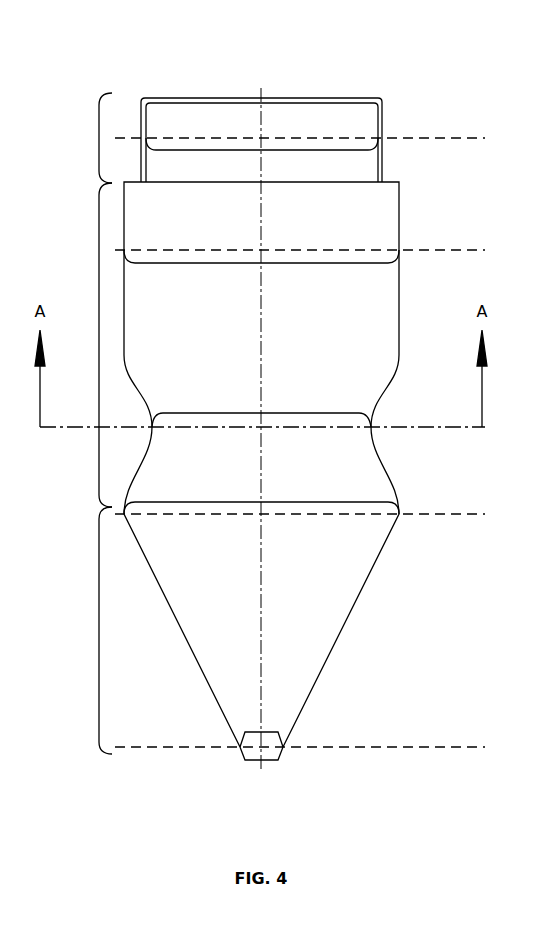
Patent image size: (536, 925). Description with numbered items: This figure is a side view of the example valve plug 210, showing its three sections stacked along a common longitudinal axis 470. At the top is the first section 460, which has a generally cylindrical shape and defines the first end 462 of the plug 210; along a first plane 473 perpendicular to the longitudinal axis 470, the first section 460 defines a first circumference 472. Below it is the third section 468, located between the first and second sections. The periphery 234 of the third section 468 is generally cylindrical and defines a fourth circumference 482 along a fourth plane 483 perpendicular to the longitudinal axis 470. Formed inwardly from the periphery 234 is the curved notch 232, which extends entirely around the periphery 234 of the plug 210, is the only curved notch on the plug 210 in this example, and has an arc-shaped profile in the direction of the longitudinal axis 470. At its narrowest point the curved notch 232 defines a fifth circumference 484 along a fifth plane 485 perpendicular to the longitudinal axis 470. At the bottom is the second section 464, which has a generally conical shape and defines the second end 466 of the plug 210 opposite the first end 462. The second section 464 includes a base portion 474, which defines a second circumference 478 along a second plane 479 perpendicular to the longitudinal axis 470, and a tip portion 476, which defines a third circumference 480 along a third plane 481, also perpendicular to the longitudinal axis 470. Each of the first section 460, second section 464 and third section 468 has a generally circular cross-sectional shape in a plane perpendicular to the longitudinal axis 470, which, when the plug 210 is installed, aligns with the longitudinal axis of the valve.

The plug 210 is at (389, 78).
The first section 460 is at (99, 138).
The first end 462 is at (298, 97).
The second section 464 is at (99, 630).
The second end 466 is at (253, 763).
The third section 468 is at (99, 258).
The longitudinal axis 470 is at (262, 662).
The first circumference 472 is at (313, 153).
The first plane 473 is at (416, 137).
The base portion 474 is at (390, 532).
The tip portion 476 is at (278, 760).
The second circumference 478 is at (325, 500).
The second plane 479 is at (423, 513).
The third circumference 480 is at (277, 731).
The third plane 481 is at (416, 747).
The fourth circumference 482 is at (320, 266).
The fourth plane 483 is at (416, 250).
The fifth circumference 484 is at (314, 412).
The fifth plane 485 is at (403, 426).
The curved notch 232 is at (387, 472).
The periphery 234 is at (399, 311).